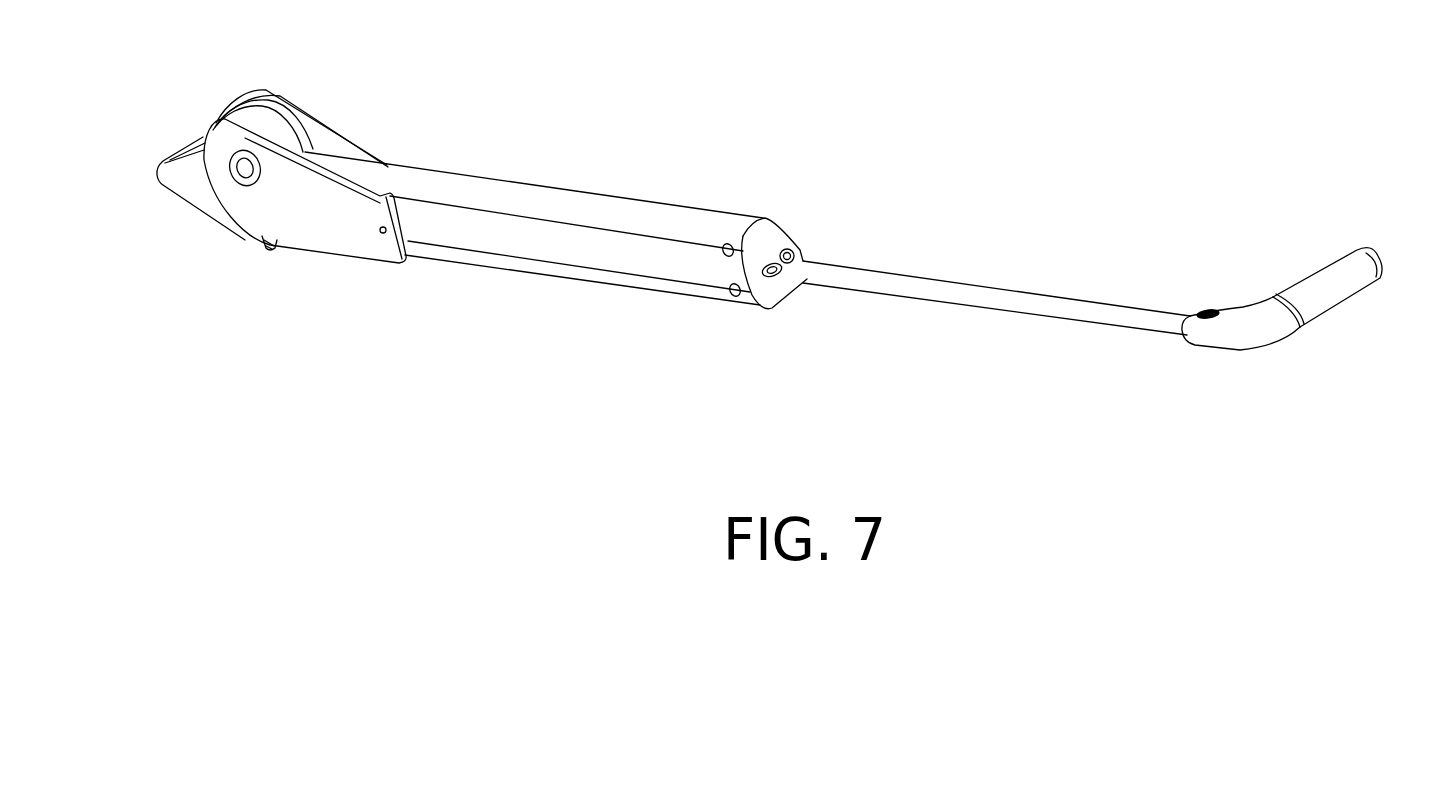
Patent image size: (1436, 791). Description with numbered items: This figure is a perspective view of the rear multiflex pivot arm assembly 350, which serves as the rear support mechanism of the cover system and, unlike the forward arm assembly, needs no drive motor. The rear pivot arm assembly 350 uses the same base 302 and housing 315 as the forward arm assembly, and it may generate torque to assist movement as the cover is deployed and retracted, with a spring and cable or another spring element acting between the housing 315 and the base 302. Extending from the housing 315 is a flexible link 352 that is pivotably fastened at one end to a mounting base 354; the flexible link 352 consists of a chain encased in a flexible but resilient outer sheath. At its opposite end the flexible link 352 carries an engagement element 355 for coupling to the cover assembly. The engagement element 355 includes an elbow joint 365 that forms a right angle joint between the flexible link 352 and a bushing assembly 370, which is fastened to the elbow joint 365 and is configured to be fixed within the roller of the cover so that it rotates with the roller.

The base 302 is at (250, 233).
The housing 315 is at (643, 207).
The rear multiflex pivot arm assembly 350 is at (735, 200).
The flexible link 352 is at (1062, 310).
The mounting base 354 is at (770, 238).
The engagement element 355 is at (1278, 270).
The elbow joint 365 is at (1233, 338).
The bushing assembly 370 is at (1333, 293).